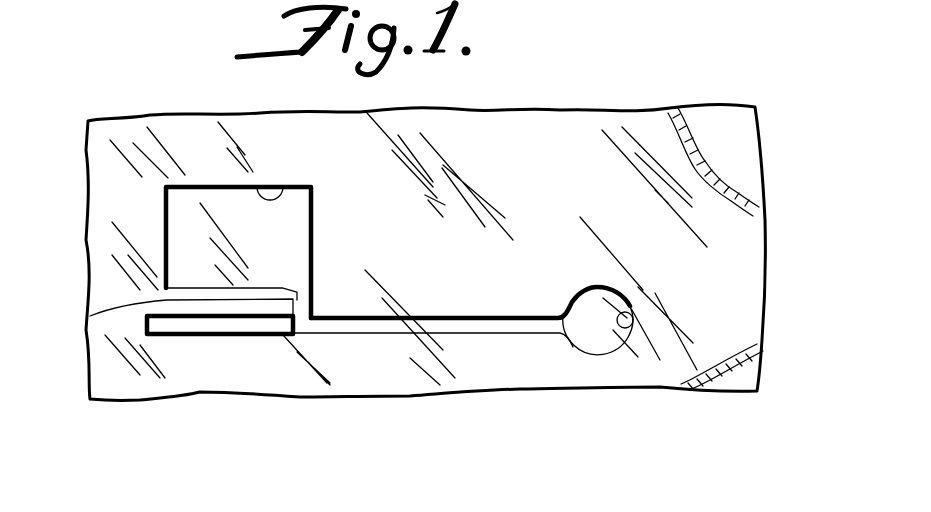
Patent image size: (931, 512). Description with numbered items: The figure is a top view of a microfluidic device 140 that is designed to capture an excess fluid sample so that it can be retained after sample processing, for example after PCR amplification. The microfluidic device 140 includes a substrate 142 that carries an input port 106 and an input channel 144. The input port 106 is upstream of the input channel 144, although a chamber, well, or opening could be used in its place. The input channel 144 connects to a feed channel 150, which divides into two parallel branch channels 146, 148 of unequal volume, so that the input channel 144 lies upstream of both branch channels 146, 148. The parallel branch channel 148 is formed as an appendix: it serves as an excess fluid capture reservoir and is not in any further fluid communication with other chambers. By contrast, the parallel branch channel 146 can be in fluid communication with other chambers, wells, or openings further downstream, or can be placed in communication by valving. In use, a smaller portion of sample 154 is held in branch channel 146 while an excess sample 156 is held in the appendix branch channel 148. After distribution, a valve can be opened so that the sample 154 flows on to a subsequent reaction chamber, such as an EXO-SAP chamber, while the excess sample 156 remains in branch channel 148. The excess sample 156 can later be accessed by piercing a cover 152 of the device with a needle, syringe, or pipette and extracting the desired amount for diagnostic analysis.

The input port 106 is at (633, 335).
The microfluidic device 140 is at (736, 244).
The substrate 142 is at (740, 147).
The input channel 144 is at (527, 325).
The parallel branch channel 146 is at (212, 330).
The parallel branch channel 148 is at (256, 287).
The feed channel 150 is at (117, 306).
The cover 152 is at (115, 247).
The sample 154 is at (275, 326).
The excess sample 156 is at (193, 227).